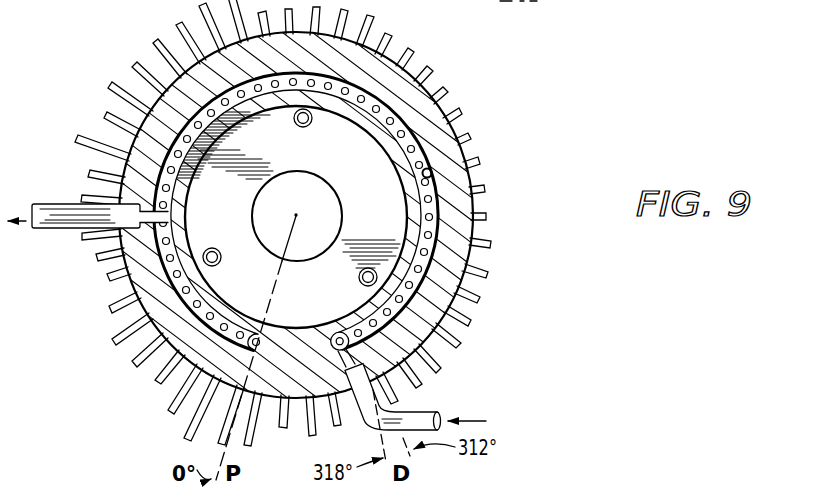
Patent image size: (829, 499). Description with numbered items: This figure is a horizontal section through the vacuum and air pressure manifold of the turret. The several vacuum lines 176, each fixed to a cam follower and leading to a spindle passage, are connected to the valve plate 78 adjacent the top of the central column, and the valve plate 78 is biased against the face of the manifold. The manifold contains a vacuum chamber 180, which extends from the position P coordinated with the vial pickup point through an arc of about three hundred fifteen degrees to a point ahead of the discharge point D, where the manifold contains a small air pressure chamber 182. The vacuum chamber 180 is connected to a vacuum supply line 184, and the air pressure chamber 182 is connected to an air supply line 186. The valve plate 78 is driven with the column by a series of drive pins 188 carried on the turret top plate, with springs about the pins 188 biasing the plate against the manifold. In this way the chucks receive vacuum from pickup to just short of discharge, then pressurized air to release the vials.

The valve plate 78 is at (408, 130).
The vacuum line 176 is at (492, 262).
The vacuum chamber 180 is at (432, 173).
The air pressure chamber 182 is at (334, 334).
The vacuum supply line 184 is at (56, 218).
The air supply line 186 is at (418, 412).
The drive pin 188 is at (311, 125).